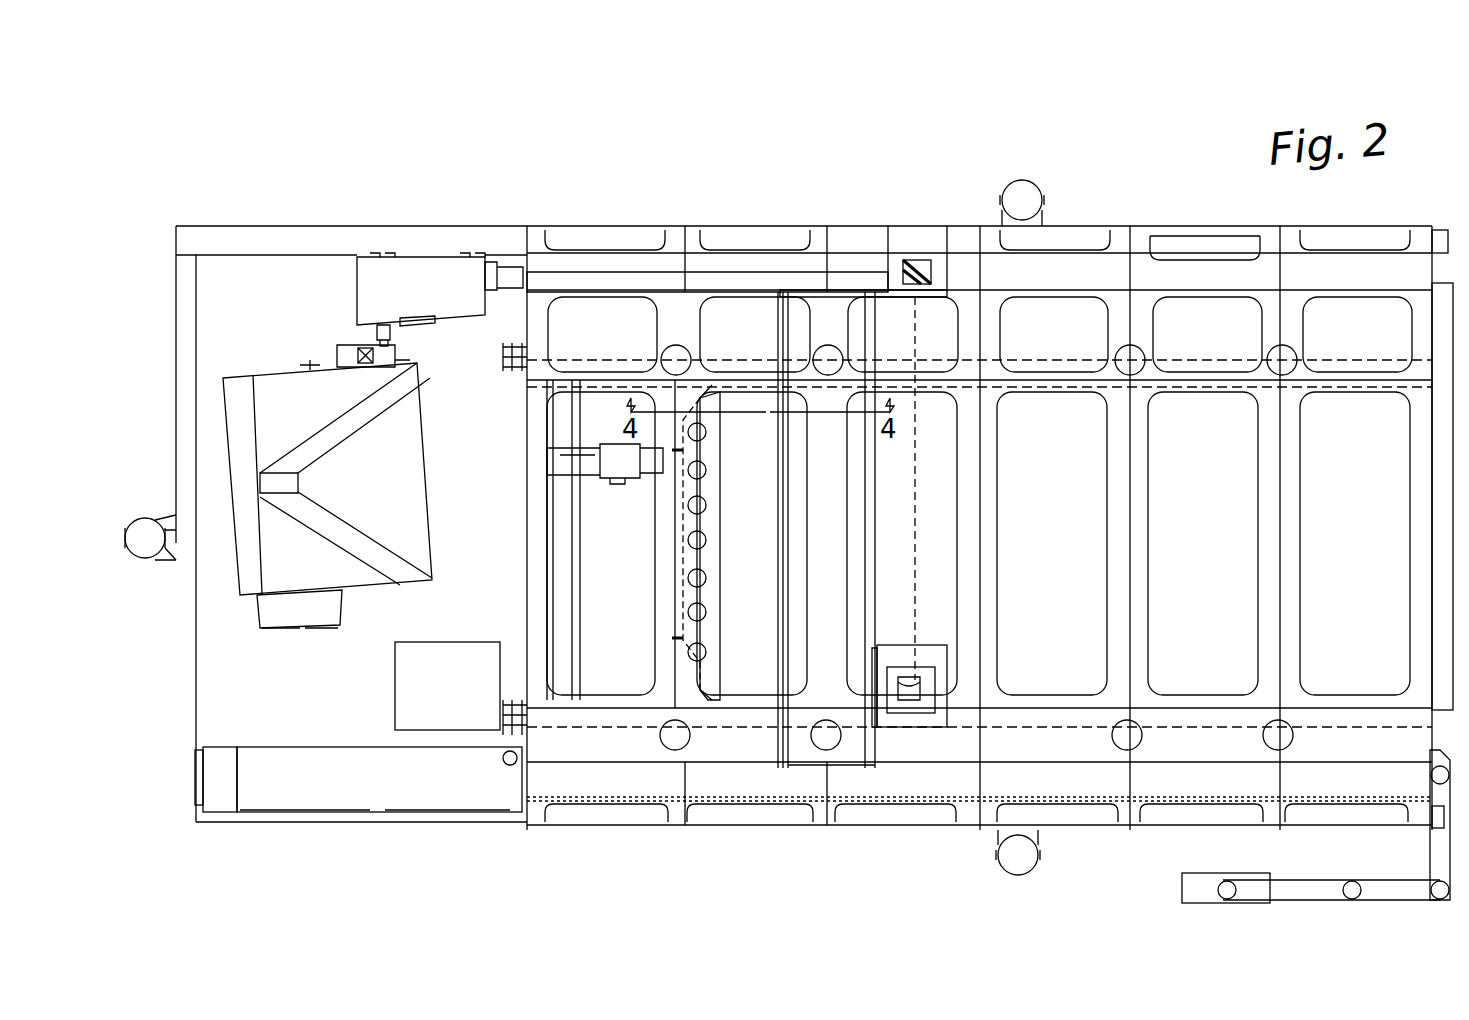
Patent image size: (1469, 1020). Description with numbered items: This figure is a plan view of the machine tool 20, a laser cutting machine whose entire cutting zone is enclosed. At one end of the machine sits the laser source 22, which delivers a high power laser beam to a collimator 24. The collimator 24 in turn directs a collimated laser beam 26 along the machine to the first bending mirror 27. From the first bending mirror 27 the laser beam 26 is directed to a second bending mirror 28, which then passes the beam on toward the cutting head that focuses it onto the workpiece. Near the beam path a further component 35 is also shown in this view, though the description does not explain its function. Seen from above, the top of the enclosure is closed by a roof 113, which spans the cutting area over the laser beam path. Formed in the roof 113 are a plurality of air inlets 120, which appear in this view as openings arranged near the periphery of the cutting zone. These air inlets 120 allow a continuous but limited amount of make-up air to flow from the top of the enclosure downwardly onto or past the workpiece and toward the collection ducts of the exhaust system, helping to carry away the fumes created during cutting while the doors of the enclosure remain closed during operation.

The machine tool 20 is at (1103, 160).
The laser source 22 is at (287, 390).
The collimator 24 is at (400, 280).
The collimated laser beam 26 is at (585, 278).
The first bending mirror 27 is at (910, 270).
The second bending mirror 28 is at (907, 700).
The perforated plate 35 is at (712, 592).
The roof 113 is at (1222, 552).
The air inlets 120 is at (830, 350).